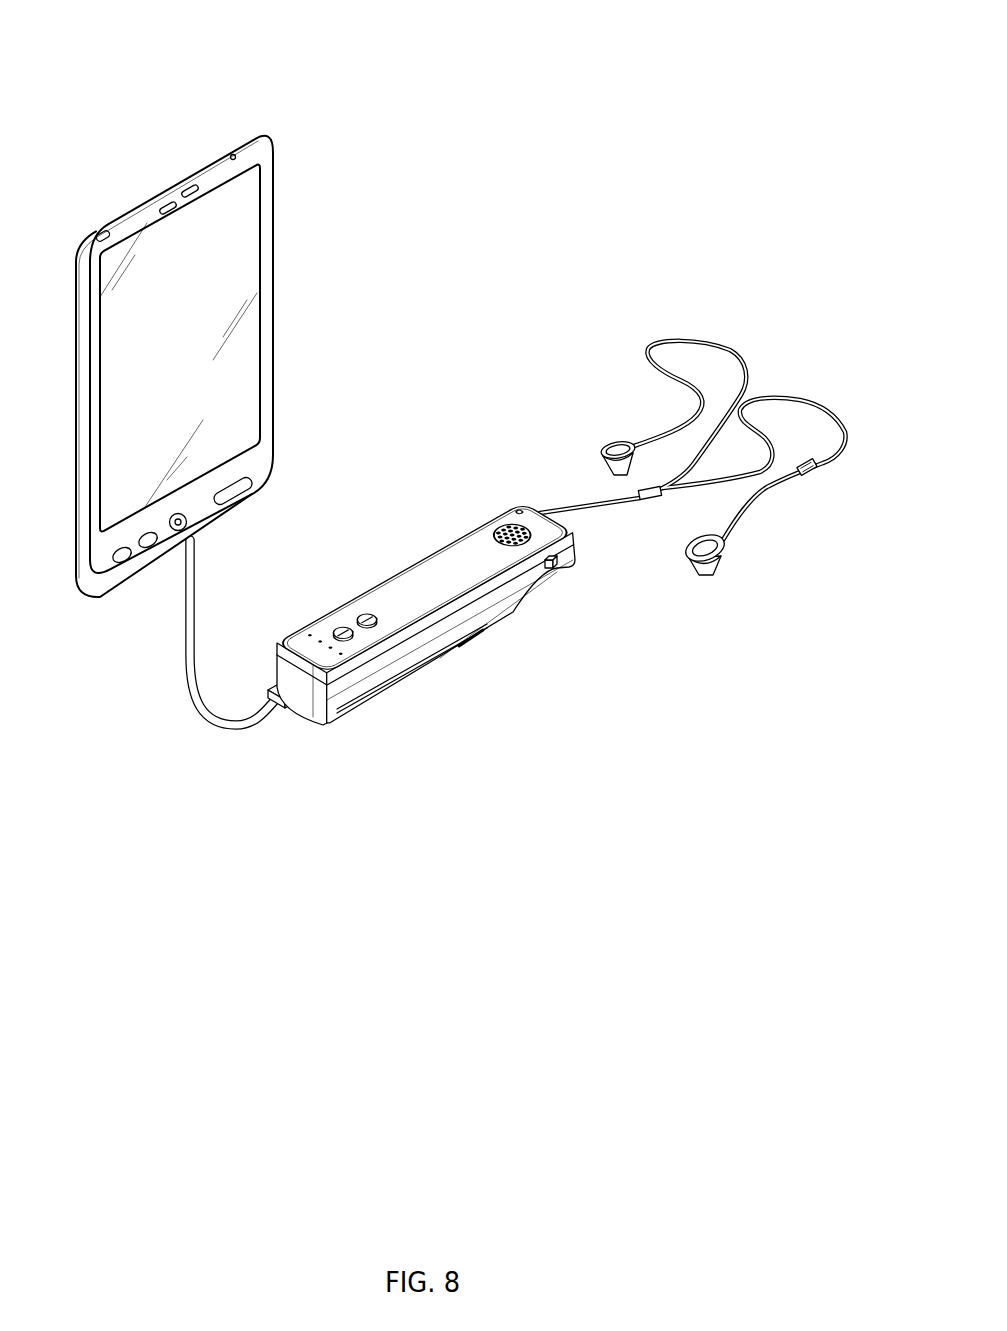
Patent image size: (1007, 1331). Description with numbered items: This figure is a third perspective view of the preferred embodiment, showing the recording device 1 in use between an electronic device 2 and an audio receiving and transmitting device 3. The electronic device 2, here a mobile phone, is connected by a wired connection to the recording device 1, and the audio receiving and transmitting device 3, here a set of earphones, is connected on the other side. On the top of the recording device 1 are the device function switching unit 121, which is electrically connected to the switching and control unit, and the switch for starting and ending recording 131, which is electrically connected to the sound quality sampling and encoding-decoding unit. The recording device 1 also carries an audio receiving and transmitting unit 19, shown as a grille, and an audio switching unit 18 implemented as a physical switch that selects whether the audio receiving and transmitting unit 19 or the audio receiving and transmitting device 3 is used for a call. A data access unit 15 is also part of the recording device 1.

The recording device 1 is at (472, 601).
The electronic device 2 is at (178, 192).
The audio receiving and transmitting device 3 is at (618, 440).
The data access unit 15 is at (365, 702).
The audio switching unit 18 is at (560, 570).
The audio receiving and transmitting unit 19 is at (500, 523).
The device function switching unit 121 is at (377, 620).
The switch for starting and ending recording 131 is at (352, 635).